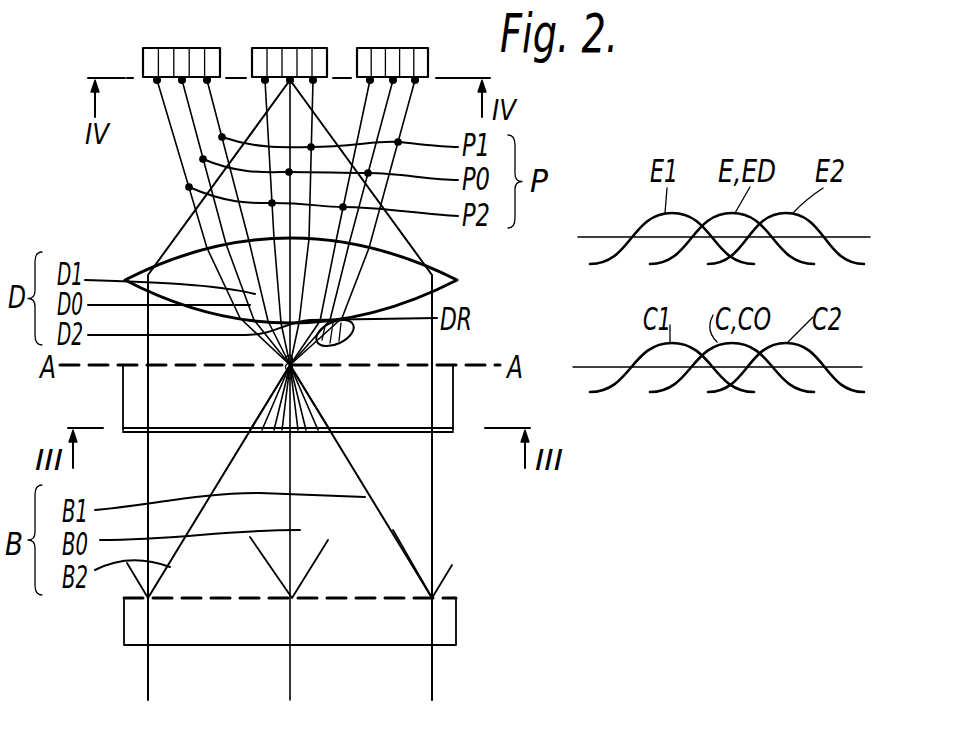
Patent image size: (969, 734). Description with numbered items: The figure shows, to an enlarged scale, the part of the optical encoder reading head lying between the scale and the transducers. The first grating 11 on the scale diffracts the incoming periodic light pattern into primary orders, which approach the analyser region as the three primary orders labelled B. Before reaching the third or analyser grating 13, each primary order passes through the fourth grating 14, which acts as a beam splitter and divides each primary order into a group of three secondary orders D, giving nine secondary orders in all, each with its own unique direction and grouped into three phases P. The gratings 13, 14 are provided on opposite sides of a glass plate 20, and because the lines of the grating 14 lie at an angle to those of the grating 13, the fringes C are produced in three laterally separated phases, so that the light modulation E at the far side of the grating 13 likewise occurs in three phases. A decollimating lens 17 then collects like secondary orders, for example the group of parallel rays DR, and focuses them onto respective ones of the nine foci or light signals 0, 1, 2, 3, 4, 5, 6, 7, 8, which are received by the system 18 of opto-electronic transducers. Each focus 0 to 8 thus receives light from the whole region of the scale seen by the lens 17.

The system of opto-electronic transducers 18 is at (142, 62).
The focus 8 is at (157, 80).
The focus 6 is at (182, 80).
The focus 7 is at (207, 80).
The focus 2 is at (265, 80).
The focus 0 is at (290, 80).
The focus 1 is at (313, 80).
The focus 5 is at (370, 80).
The focus 4 is at (393, 80).
The focus 3 is at (415, 80).
The decollimating lens 17 is at (440, 274).
The third or analyser grating 13 is at (368, 366).
The glass plate 20 is at (123, 405).
The fourth grating 14 is at (395, 434).
The first grating 11 is at (447, 596).